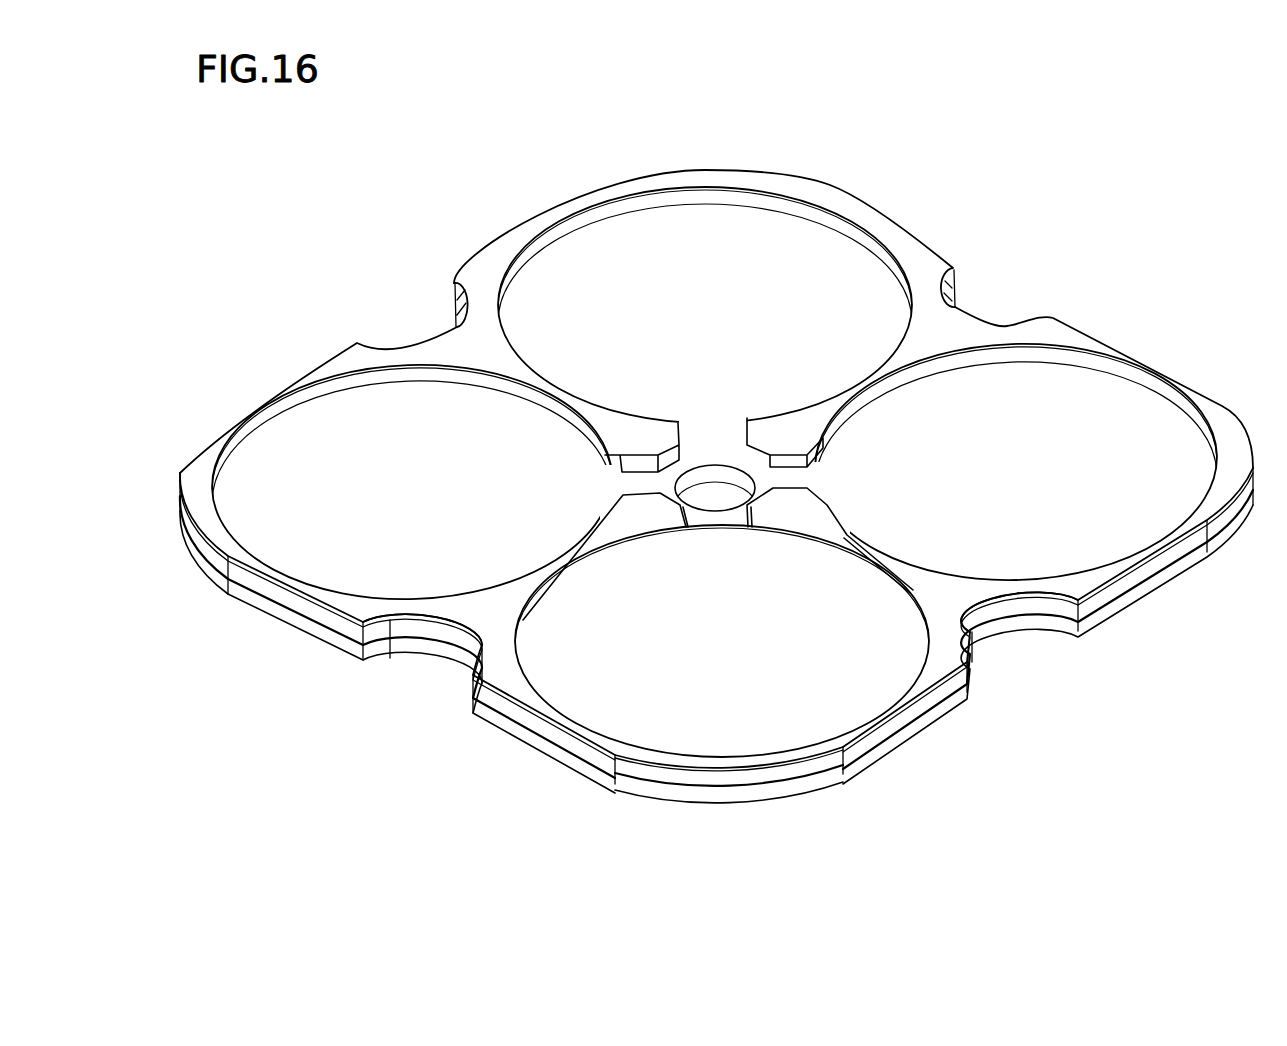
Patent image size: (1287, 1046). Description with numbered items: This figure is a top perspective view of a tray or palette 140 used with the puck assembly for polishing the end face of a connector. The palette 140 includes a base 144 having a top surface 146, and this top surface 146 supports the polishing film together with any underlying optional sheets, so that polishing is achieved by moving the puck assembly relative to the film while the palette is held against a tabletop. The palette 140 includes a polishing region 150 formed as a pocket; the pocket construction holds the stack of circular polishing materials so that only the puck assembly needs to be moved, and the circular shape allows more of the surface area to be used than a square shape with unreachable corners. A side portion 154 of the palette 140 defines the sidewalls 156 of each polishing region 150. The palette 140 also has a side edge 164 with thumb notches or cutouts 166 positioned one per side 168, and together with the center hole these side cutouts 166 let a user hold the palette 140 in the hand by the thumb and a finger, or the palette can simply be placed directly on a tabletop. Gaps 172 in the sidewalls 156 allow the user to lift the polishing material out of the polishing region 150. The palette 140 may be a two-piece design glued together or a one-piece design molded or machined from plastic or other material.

The palette 140 is at (452, 185).
The base 144 is at (908, 737).
The top surface 146 is at (1065, 417).
The polishing region 150 is at (726, 227).
The side portion 154 is at (923, 270).
The sidewalls 156 is at (482, 378).
The side edge 164 is at (747, 808).
The thumb notches or cutouts 166 is at (418, 650).
The side 168 is at (503, 719).
The gaps 172 is at (792, 477).